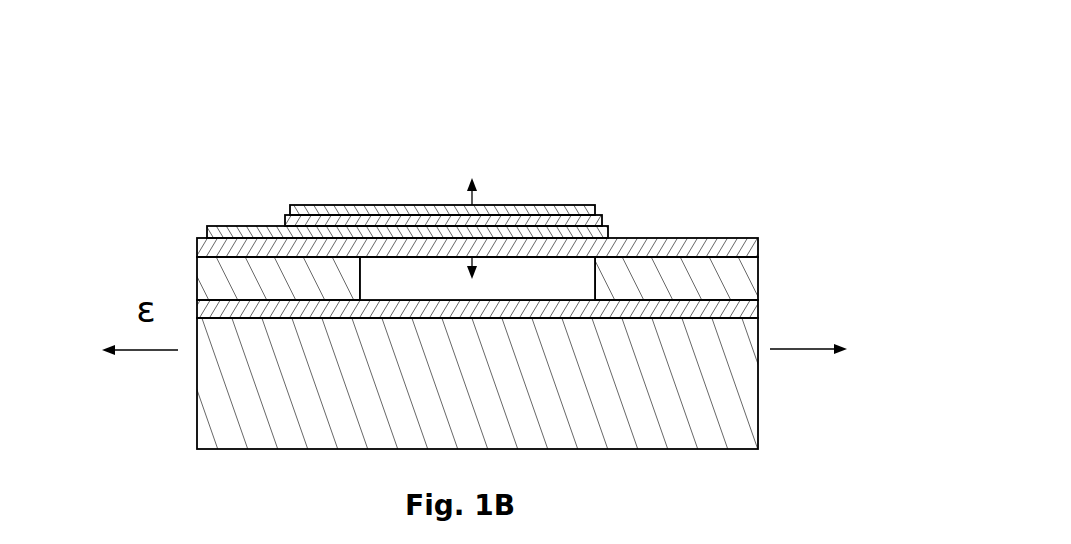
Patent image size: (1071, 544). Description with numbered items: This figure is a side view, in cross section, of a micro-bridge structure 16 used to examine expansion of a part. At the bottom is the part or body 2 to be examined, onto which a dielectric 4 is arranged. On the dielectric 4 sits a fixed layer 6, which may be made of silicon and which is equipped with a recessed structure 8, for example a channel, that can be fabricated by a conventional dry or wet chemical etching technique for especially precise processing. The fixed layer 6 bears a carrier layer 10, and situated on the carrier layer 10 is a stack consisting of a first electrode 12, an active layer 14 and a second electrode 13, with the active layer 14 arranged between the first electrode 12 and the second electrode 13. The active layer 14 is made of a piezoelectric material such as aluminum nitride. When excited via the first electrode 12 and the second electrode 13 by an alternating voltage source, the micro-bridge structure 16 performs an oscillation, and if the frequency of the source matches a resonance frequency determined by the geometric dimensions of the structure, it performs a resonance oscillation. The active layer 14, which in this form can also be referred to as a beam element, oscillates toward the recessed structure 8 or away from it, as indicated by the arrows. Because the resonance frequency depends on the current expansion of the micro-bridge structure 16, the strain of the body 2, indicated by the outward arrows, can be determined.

The body 2 is at (720, 407).
The dielectric 4 is at (750, 307).
The fixed layer 6 is at (778, 275).
The recessed structure 8 is at (405, 290).
The carrier layer 10 is at (748, 240).
The first electrode 12 is at (607, 233).
The second electrode 13 is at (343, 205).
The active layer 14 is at (603, 215).
The micro-bridge structure 16 is at (560, 138).